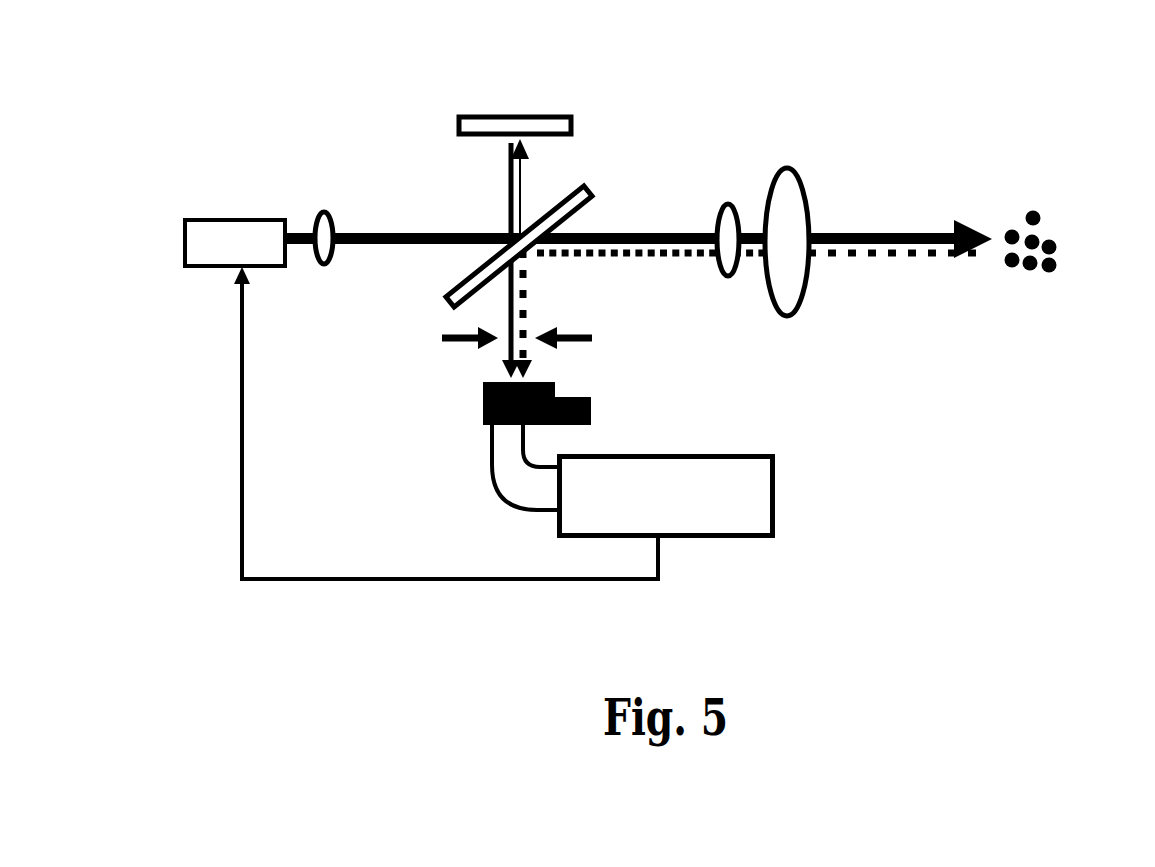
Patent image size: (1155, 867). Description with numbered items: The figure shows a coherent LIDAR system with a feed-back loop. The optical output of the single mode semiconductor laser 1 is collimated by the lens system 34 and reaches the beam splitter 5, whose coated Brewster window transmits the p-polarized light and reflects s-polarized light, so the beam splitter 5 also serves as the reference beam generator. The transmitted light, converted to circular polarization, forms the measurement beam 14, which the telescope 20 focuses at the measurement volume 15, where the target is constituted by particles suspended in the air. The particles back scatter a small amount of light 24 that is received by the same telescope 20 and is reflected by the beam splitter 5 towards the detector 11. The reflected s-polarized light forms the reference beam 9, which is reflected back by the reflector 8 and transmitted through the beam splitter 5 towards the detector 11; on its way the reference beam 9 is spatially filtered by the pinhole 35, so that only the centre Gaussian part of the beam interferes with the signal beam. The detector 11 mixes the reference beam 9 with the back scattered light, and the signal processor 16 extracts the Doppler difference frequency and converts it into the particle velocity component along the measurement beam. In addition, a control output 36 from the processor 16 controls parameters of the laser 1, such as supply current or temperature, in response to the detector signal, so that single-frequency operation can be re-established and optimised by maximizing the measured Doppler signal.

The semiconductor laser 1 is at (222, 269).
The beam splitter 5 is at (527, 247).
The reflector 8 is at (497, 117).
The reference beam 9 is at (507, 193).
The detector 11 is at (483, 415).
The measurement beam 14 is at (878, 233).
The measurement volume 15 is at (1052, 226).
The signal processor 16 is at (775, 485).
The telescope 20 is at (731, 205).
The back scattered light 24 is at (837, 254).
The lens system 34 is at (320, 212).
The pinhole 35 is at (445, 348).
The control output 36 is at (413, 580).